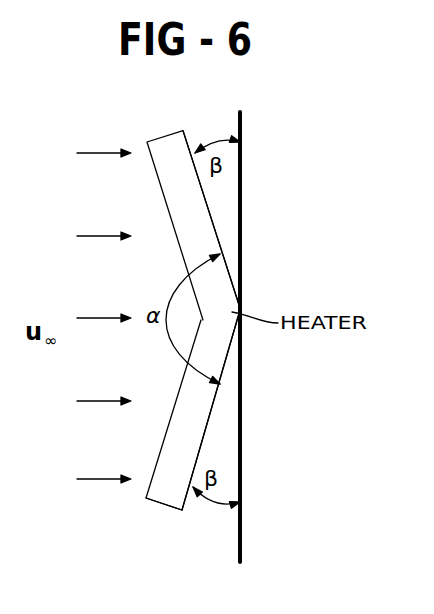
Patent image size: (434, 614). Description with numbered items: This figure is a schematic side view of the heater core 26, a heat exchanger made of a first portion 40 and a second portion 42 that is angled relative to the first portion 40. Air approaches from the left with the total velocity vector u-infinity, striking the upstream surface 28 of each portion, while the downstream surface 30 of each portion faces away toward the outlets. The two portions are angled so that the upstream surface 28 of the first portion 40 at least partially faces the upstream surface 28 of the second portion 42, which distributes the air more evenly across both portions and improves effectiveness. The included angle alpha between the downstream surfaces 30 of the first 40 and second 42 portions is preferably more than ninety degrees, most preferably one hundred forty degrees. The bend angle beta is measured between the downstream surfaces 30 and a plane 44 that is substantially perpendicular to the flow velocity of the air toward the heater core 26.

The heater core 26 is at (164, 491).
The upstream surface 28 is at (172, 400).
The downstream surface 30 is at (212, 218).
The first portion 40 is at (170, 173).
The second portion 42 is at (193, 424).
The plane 44 is at (240, 545).